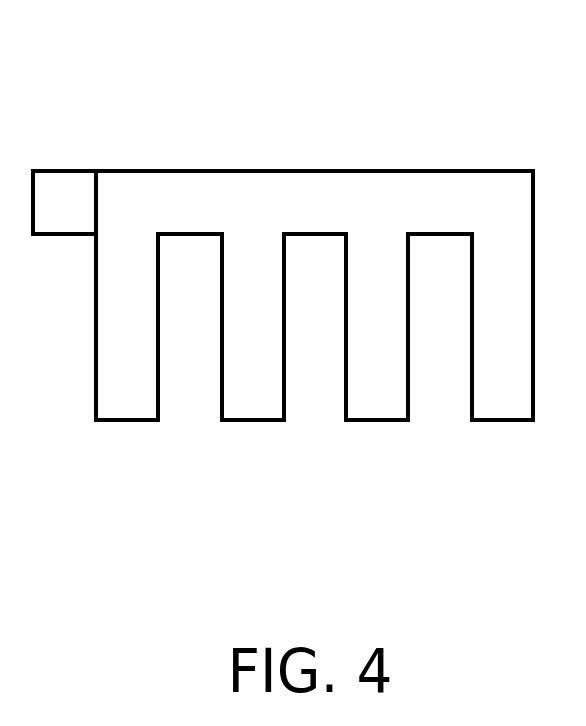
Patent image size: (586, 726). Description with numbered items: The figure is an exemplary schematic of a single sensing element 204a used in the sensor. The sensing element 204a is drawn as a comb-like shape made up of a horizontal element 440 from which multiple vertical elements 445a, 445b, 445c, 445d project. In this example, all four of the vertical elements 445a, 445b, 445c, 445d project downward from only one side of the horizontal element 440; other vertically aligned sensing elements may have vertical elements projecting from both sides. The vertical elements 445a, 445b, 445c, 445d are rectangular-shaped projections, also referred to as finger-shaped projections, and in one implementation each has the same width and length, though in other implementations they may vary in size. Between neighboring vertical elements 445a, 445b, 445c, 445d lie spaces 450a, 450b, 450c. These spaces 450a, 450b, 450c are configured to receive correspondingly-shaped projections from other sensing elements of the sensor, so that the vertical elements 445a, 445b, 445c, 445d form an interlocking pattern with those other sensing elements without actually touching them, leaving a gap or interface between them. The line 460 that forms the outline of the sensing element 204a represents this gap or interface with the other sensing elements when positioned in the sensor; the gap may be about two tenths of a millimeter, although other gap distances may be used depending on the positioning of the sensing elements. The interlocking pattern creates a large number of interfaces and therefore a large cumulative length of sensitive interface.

The sensing element 204a is at (313, 126).
The line 460 is at (444, 163).
The horizontal element 440 is at (88, 208).
The space 450a is at (188, 333).
The space 450b is at (318, 333).
The space 450c is at (447, 323).
The vertical element 445a is at (125, 378).
The vertical element 445b is at (253, 378).
The vertical element 445c is at (373, 378).
The vertical element 445d is at (493, 378).